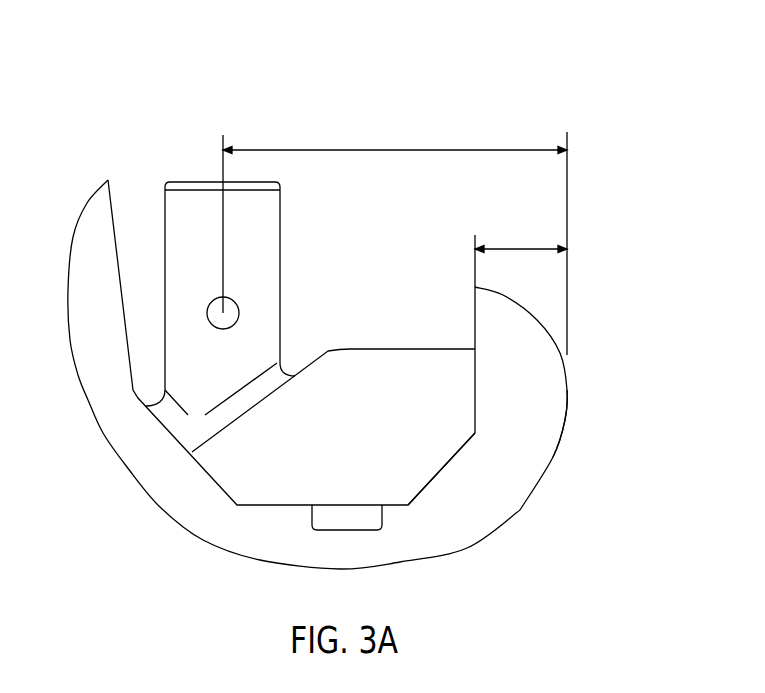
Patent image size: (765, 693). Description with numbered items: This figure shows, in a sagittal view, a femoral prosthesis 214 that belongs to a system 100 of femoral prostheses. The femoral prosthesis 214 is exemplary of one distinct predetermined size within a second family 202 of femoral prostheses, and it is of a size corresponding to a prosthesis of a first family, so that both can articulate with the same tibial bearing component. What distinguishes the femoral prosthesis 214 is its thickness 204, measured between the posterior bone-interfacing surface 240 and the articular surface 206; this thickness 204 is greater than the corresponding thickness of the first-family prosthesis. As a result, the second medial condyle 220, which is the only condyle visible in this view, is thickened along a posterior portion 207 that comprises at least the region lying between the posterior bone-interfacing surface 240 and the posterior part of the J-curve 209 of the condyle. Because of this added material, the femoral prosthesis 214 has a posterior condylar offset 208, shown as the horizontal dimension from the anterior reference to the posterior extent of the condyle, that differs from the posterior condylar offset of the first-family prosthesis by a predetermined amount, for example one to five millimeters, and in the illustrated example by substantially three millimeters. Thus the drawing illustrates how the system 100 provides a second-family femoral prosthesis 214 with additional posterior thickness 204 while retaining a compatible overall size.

The system 100 is at (362, 314).
The second family 202 is at (126, 166).
The thickness 204 is at (520, 247).
The articular surface 206 is at (567, 387).
The posterior portion 207 is at (575, 426).
The posterior condylar offset 208 is at (397, 150).
The J-curve 209 is at (440, 557).
The femoral prosthesis 214 is at (510, 122).
The second medial condyle 220 is at (530, 453).
The posterior bone-interfacing surface 240 is at (475, 318).